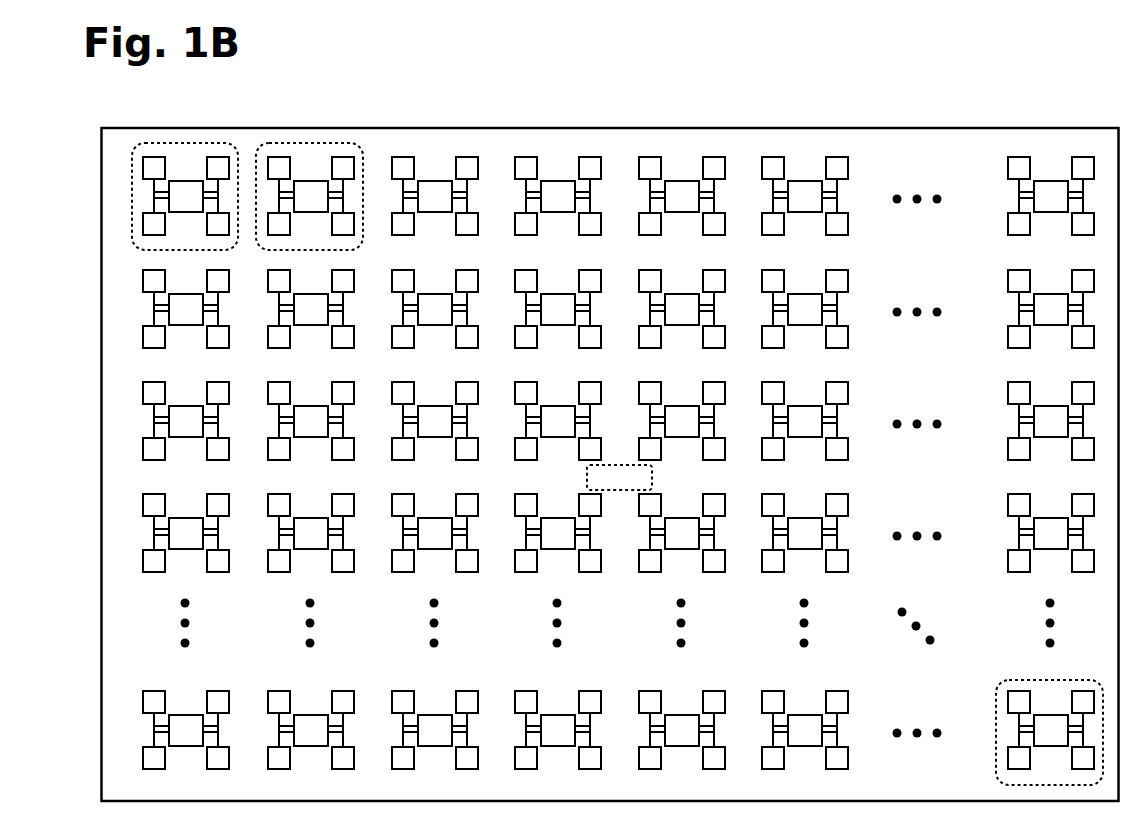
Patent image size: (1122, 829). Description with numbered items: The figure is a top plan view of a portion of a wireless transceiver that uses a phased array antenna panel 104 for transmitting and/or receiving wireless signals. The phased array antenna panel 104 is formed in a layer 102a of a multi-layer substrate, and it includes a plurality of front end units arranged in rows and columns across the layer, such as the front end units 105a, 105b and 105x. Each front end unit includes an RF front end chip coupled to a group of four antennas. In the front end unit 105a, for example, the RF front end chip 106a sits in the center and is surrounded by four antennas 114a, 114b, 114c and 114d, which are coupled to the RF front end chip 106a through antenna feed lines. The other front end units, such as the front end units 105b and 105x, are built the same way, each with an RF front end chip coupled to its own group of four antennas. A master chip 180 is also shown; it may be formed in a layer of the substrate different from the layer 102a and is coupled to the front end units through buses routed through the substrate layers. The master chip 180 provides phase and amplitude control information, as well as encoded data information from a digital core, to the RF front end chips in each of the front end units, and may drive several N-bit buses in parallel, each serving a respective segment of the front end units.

The layer 102a is at (1049, 126).
The phased array antenna panel 104 is at (632, 798).
The front end unit 105a is at (156, 182).
The front end unit 105b is at (266, 143).
The front end unit 105x is at (998, 775).
The RF front end chip 106a is at (169, 195).
The antenna 114a is at (143, 166).
The antenna 114b is at (218, 157).
The antenna 114c is at (218, 235).
The antenna 114d is at (143, 228).
The master chip 180 is at (634, 489).